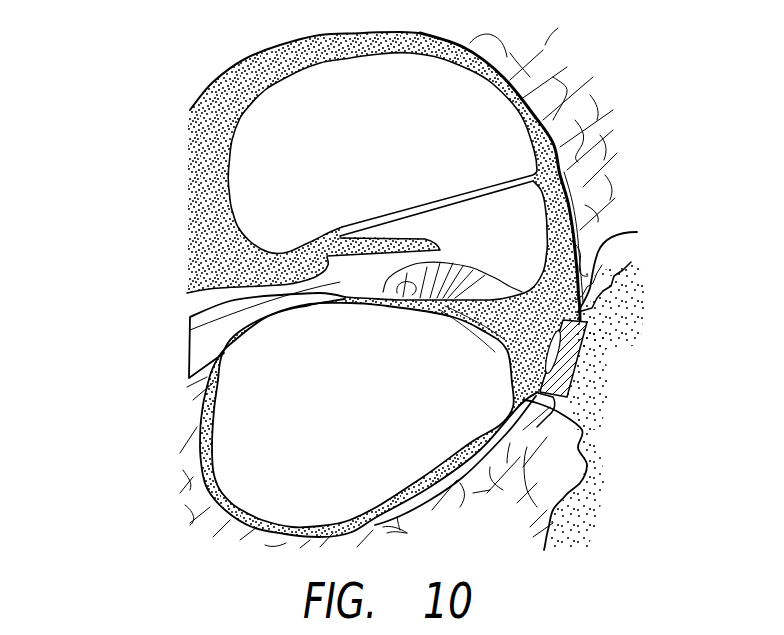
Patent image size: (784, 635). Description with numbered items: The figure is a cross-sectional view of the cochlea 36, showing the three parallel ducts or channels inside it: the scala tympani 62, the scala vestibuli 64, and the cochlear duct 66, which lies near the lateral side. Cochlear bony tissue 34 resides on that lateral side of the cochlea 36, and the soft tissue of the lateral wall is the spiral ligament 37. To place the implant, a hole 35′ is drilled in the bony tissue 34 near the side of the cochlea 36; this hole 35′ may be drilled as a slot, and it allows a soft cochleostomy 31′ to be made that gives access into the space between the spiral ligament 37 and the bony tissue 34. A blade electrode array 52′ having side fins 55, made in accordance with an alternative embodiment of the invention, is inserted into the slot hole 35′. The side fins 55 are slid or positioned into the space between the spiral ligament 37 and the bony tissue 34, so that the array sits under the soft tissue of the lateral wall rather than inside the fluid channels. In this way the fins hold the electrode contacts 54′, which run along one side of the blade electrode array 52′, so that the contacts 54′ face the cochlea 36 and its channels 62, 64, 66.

The cochlea 36 is at (168, 108).
The bony tissue 34 is at (581, 118).
The spiral ligament 37 is at (560, 165).
The side fins 55 is at (637, 232).
The soft cochleostomy 31′ is at (603, 314).
The blade electrode array 52′ is at (584, 361).
The electrode contacts 54′ is at (538, 347).
The scala vestibuli 64 is at (383, 151).
The cochlear duct 66 is at (505, 242).
The scala tympani 62 is at (357, 423).
The hole 35′ is at (590, 486).